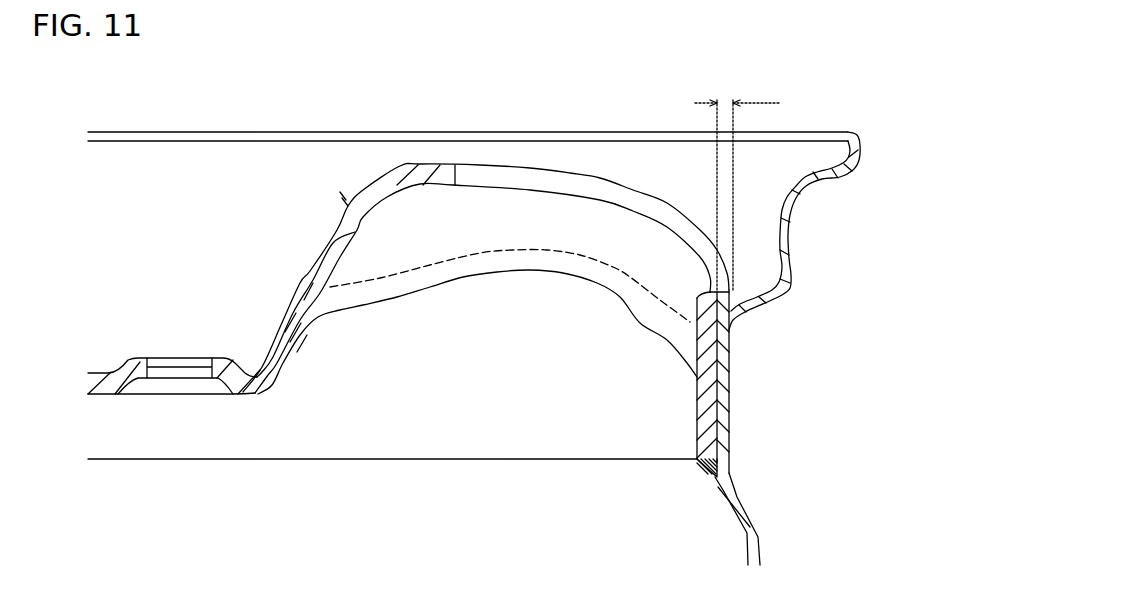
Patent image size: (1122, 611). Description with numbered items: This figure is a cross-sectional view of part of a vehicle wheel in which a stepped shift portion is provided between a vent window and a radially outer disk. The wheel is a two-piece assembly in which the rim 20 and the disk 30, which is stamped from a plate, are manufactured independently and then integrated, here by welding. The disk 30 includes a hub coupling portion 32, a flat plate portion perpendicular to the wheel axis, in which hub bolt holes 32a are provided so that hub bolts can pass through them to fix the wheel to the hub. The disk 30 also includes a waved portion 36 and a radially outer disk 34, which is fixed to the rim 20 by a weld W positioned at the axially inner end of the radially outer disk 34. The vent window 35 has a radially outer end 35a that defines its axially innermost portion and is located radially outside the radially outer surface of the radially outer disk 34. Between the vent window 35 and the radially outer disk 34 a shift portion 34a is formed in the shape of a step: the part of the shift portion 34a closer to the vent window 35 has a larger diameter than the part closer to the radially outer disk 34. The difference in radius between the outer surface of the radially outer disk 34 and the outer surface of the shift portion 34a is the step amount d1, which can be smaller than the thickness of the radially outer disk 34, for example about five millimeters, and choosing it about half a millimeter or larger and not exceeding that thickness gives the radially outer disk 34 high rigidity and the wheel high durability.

The rim 20 is at (862, 160).
The disk 30 is at (345, 205).
The hub coupling portion 32 is at (105, 387).
The hub bolt holes 32a is at (170, 357).
The radially outer disk 34 is at (710, 418).
The shift portion 34a is at (697, 320).
The vent window 35 is at (642, 190).
The radially outer end of the vent window 35a is at (728, 274).
The waved portion 36 is at (530, 262).
The weld W is at (699, 463).
The step amount d1 is at (740, 186).